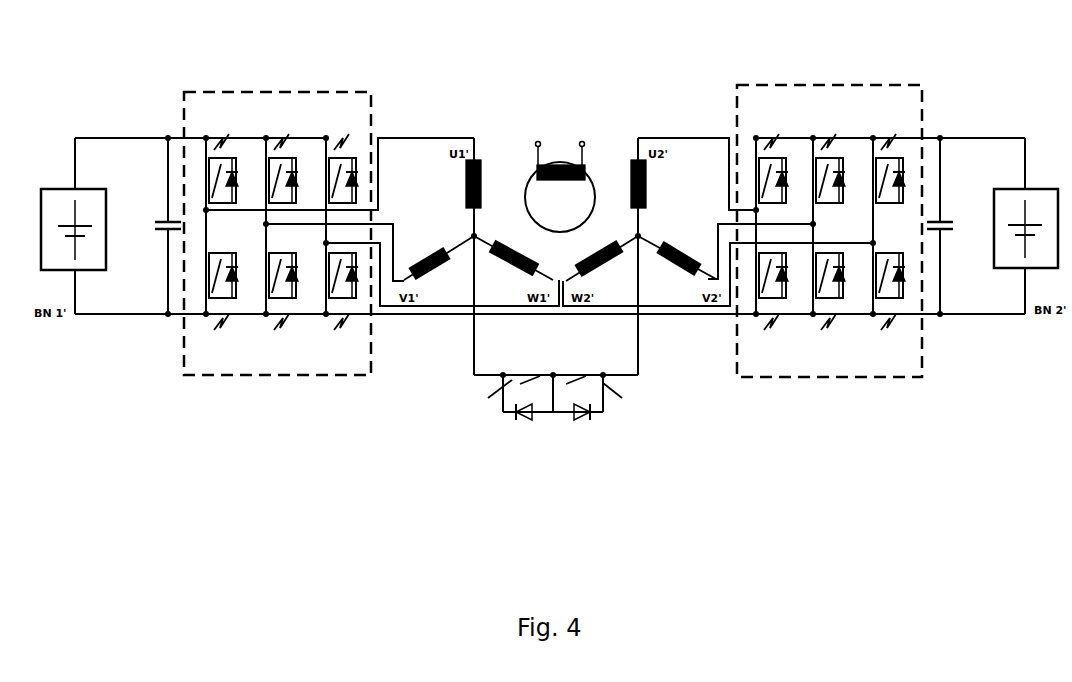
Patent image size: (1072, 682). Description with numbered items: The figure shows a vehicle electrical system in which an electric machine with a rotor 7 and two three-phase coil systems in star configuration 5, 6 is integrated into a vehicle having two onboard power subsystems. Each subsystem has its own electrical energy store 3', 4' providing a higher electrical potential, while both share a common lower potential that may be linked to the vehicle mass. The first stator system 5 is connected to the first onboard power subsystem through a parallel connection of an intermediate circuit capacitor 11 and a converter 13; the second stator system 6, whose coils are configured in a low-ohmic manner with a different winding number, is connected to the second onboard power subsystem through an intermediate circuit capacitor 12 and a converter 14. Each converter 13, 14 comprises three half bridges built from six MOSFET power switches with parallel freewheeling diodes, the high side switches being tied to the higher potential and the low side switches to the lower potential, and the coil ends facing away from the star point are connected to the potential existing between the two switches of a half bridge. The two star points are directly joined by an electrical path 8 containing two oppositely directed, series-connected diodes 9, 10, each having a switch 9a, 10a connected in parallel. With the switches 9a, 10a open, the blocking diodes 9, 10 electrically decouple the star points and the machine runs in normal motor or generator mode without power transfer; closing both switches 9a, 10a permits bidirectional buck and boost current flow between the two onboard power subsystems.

The electrical energy store 3' is at (89, 226).
The electrical energy store 4' is at (1030, 220).
The 3-phase coil system 5 is at (492, 150).
The 3-phase coil system 6 is at (661, 158).
The rotor 7 is at (590, 120).
The electrical path 8 is at (569, 372).
The diode 9 is at (446, 441).
The switch 9a is at (505, 415).
The diode 10 is at (675, 427).
The switch 10a is at (686, 425).
The intermediate circuit capacitor 11 is at (160, 231).
The intermediate circuit capacitor 12 is at (950, 230).
The converter 13 is at (277, 233).
The converter 14 is at (829, 231).